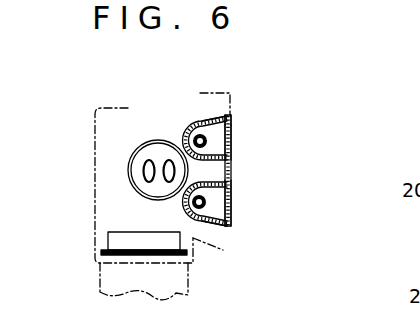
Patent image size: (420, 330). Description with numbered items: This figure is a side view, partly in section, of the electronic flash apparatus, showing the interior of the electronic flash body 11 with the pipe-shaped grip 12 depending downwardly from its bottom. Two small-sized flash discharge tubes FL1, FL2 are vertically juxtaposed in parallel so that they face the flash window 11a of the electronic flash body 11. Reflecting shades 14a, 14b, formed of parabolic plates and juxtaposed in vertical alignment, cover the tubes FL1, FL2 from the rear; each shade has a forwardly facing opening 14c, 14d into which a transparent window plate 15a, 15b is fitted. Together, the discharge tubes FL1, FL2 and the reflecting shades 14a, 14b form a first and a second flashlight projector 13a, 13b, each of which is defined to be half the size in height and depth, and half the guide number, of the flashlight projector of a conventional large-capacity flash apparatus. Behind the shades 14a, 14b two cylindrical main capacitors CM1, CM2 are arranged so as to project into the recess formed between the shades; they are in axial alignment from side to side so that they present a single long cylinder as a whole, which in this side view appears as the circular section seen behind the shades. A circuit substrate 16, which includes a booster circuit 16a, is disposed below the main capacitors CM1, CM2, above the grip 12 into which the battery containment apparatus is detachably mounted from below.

The electronic flash body 11 is at (128, 108).
The flash window 11a is at (234, 172).
The grip 12 is at (100, 291).
The first flashlight projector 13a is at (195, 116).
The second flashlight projector 13b is at (206, 233).
The reflecting shade 14a is at (205, 117).
The reflecting shade 14b is at (213, 227).
The opening 14c is at (234, 155).
The opening 14d is at (234, 190).
The transparent window plate 15a is at (231, 124).
The transparent window plate 15b is at (229, 223).
The circuit substrate 16 is at (101, 252).
The booster circuit 16a is at (127, 240).
The flash discharge tube FL1 is at (206, 141).
The flash discharge tube FL2 is at (206, 202).
The main capacitor CM1 is at (142, 157).
The main capacitor CM2 is at (107, 169).